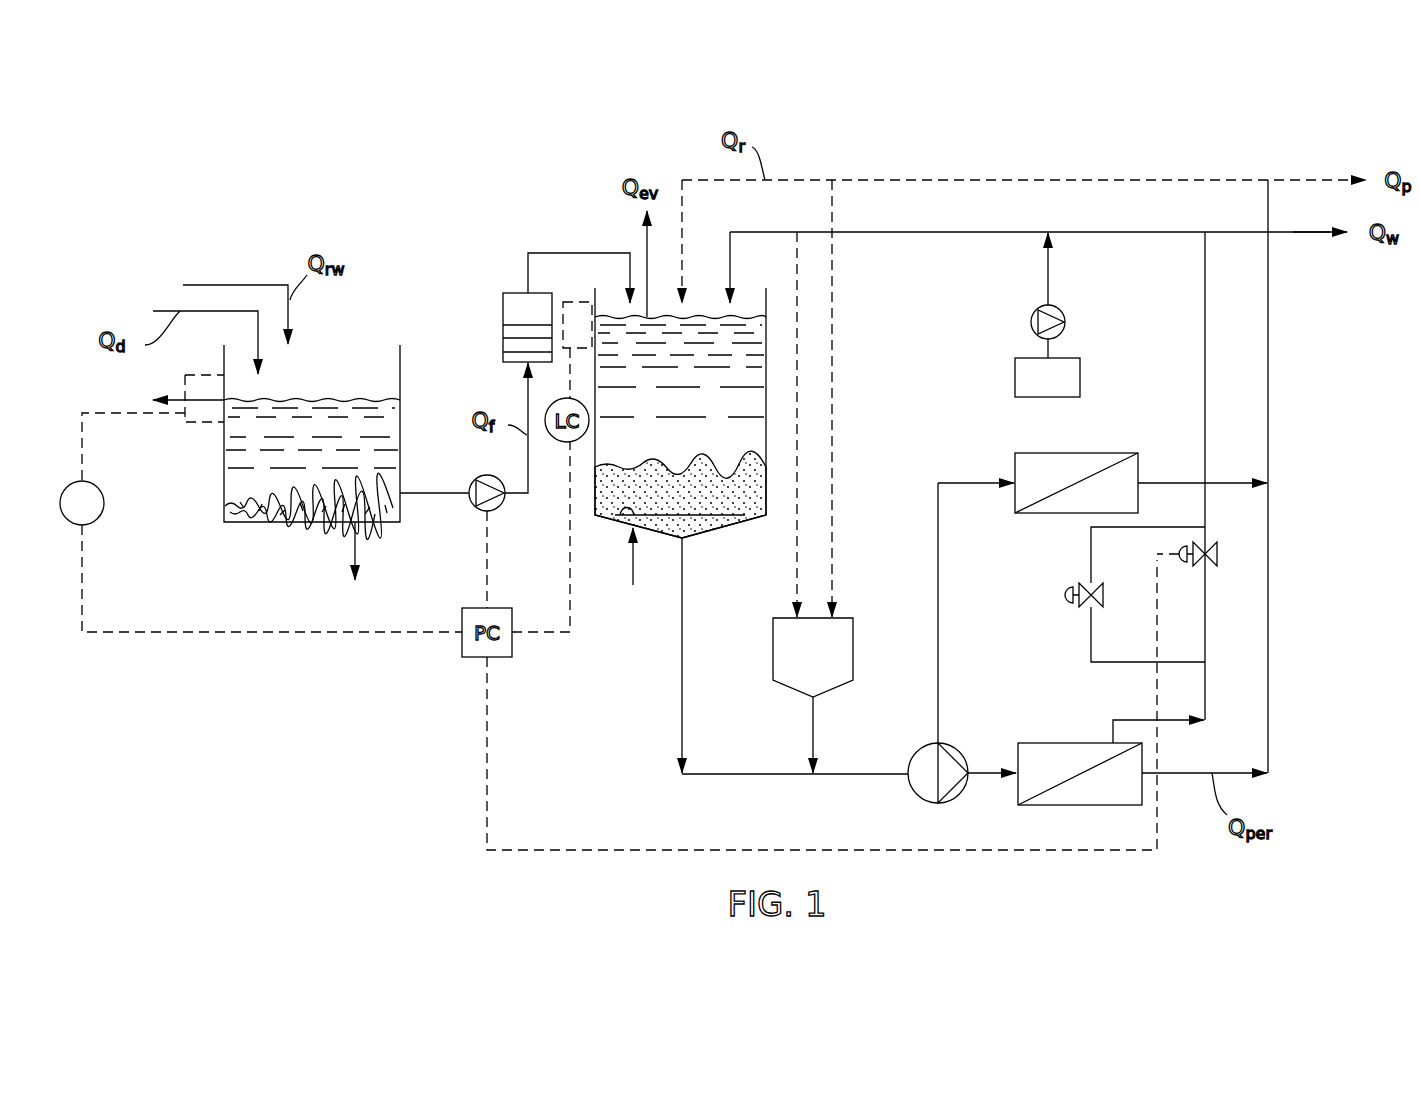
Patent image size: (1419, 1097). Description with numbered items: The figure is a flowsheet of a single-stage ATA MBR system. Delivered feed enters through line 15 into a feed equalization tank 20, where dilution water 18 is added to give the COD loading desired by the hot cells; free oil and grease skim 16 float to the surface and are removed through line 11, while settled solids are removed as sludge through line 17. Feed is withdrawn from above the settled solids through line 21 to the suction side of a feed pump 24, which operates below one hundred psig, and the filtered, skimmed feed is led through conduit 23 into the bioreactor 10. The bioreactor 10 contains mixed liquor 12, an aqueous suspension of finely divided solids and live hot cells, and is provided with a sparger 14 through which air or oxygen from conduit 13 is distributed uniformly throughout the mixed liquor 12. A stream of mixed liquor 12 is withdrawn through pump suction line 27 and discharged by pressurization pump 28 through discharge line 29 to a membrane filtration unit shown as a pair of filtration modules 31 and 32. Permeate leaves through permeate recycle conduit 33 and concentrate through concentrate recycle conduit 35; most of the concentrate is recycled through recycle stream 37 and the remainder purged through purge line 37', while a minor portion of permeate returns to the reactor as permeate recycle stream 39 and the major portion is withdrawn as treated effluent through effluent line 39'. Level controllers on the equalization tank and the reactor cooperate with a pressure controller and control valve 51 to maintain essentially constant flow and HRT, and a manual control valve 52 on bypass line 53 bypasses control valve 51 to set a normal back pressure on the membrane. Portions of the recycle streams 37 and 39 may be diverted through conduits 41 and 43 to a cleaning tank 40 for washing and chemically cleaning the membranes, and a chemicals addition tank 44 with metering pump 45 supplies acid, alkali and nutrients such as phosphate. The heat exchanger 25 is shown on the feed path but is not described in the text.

The bioreactor 10 is at (732, 525).
The line for removal of free fats or oil 11 is at (207, 395).
The mixed liquor 12 is at (668, 452).
The conduit 13 is at (632, 573).
The sparger 14 is at (620, 513).
The line 15 is at (235, 285).
The skim 16 is at (312, 400).
The line for removal of settled solids 17 is at (355, 545).
The dilution water 18 is at (167, 311).
The feed equalization tank 20 is at (250, 522).
The line 21 is at (403, 490).
The conduit 23 is at (560, 252).
The feed pump 24 is at (470, 505).
The heat exchanger 25 is at (503, 305).
The pump suction line 27 is at (680, 716).
The pressurization pump 28 is at (920, 745).
The discharge line 29 is at (983, 773).
The filtration module 31 is at (1067, 743).
The filtration module 32 is at (1013, 503).
The permeate recycle conduit 33 is at (1268, 535).
The concentrate recycle conduit 35 is at (1205, 397).
The recycle stream 37 is at (1038, 267).
The purge line 37' is at (1314, 264).
The permeate recycle stream 39 is at (1024, 217).
The effluent line 39' is at (1268, 207).
The cleaning tank 40 is at (773, 655).
The conduit 41 is at (797, 425).
The conduit 43 is at (832, 370).
The chemicals addition tank 44 is at (1080, 370).
The pump 45 is at (1060, 310).
The control valve 51 is at (1210, 565).
The manual control valve 52 is at (1063, 595).
The bypass line 53 is at (1091, 640).